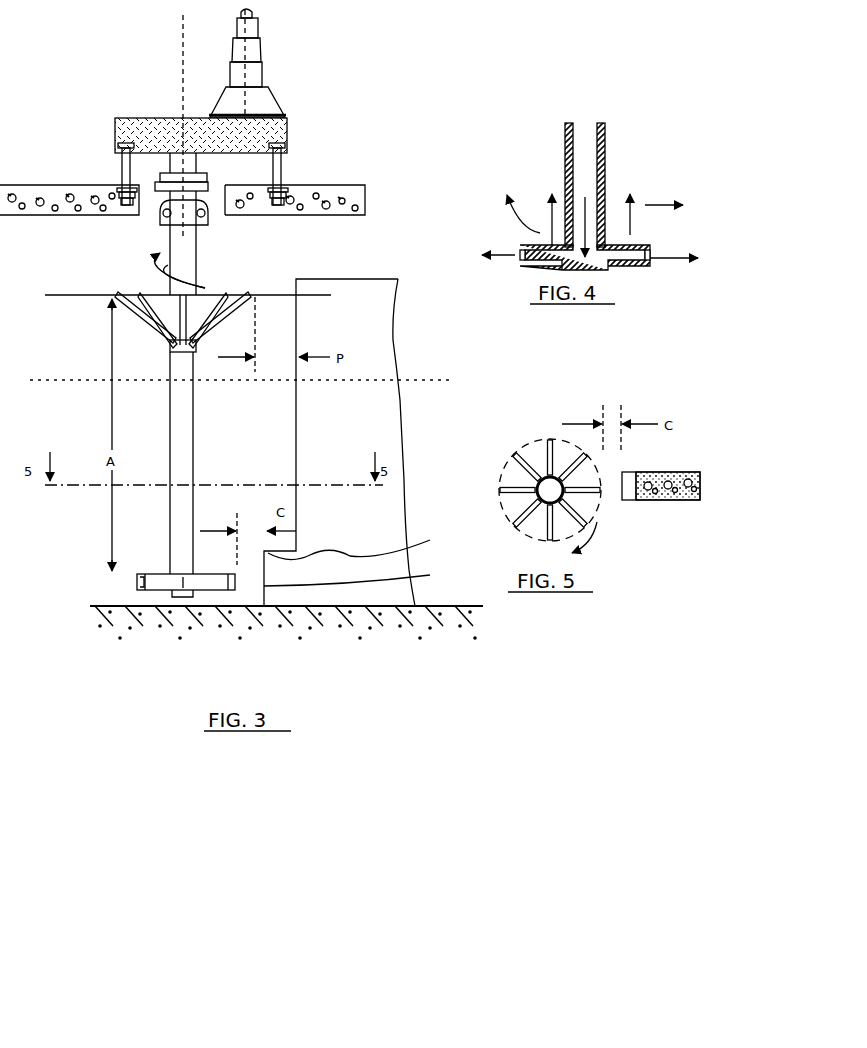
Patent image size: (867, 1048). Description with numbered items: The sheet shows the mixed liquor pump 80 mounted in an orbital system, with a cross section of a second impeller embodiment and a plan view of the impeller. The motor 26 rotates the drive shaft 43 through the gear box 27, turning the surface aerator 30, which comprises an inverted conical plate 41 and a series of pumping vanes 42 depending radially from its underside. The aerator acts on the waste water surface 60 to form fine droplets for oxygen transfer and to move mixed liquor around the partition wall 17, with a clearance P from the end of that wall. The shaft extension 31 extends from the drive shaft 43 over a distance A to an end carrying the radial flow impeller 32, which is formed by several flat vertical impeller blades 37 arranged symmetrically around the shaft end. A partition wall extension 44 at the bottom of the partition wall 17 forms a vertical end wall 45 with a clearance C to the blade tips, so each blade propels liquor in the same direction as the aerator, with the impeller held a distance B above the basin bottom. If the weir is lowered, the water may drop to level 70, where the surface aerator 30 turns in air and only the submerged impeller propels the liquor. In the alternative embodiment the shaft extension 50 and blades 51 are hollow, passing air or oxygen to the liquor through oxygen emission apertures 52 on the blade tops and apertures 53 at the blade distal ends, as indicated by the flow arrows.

In FIG. 3, the partition wall 17 is at (370, 348).
In FIG. 5, the partition wall 17 is at (682, 495).
In FIG. 3, the motor 26 is at (262, 73).
In FIG. 3, the gear box 27 is at (287, 125).
In FIG. 3, the surface aerator 30 is at (188, 297).
In FIG. 5, the surface aerator 30 is at (522, 478).
In FIG. 3, the shaft extension 31 is at (170, 422).
In FIG. 3, the radial flow impeller 32 is at (160, 573).
In FIG. 5, the radial flow impeller 32 is at (528, 462).
In FIG. 3, the impeller blades 37 is at (140, 588).
In FIG. 3, the inverted conical plate 41 is at (206, 302).
In FIG. 3, the pumping vanes 42 is at (232, 302).
In FIG. 3, the drive shaft 43 is at (190, 262).
In FIG. 3, the partition wall extension 44 is at (365, 544).
In FIG. 5, the partition wall extension 44 is at (630, 480).
In FIG. 3, the vertical end wall 45 is at (368, 573).
In FIG. 5, the vertical end wall 45 is at (622, 488).
In FIG. 4, the shaft extension 50 is at (598, 220).
In FIG. 4, the blades 51 is at (650, 255).
In FIG. 4, the oxygen emission apertures 52 is at (540, 235).
In FIG. 4, the oxygen emission apertures 53 is at (520, 257).
In FIG. 3, the waste water surface 60 is at (312, 295).
In FIG. 3, the lowered water level 70 is at (440, 380).
In FIG. 3, the mixed liquor pump 80 is at (120, 277).